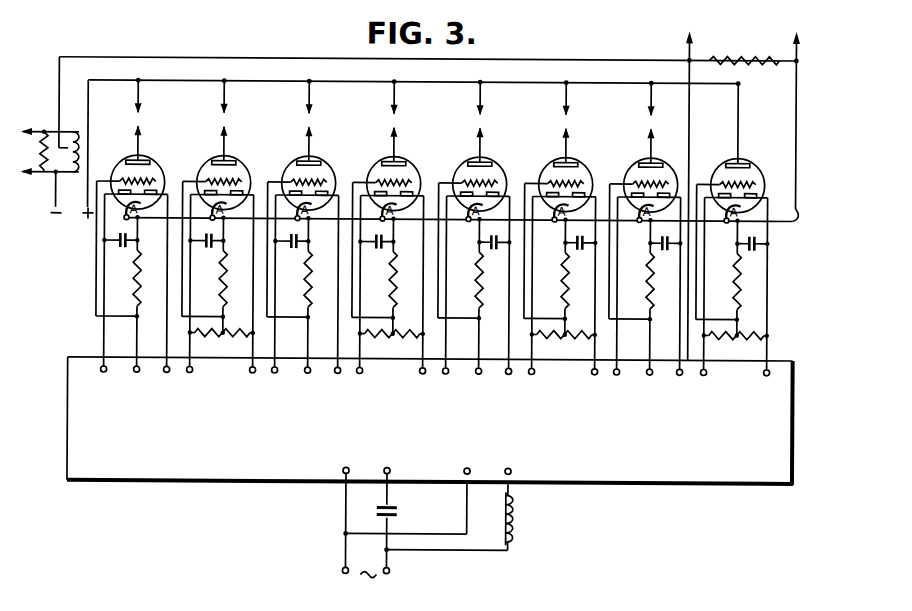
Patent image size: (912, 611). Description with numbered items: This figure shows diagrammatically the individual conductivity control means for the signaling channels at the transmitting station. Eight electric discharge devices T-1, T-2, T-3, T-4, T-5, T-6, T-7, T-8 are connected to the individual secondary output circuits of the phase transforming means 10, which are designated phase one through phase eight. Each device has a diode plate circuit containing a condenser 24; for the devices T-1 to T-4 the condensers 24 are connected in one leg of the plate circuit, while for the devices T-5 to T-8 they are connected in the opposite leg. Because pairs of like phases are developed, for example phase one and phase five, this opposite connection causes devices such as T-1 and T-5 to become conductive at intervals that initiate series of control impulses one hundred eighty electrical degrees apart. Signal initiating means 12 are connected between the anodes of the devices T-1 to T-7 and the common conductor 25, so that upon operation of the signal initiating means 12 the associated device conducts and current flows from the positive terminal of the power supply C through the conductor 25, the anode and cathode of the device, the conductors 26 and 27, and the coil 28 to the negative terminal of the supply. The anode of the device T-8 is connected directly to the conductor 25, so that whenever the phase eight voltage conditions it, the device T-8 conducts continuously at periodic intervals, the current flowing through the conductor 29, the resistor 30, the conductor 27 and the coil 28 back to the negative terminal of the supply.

The phase transforming means 10 is at (112, 472).
The signal initiating means 12 is at (304, 115).
The condensers 24 is at (120, 244).
The common conductor 25 is at (361, 72).
The conductor 26 is at (689, 146).
The conductor 27 is at (612, 49).
The coil 28 is at (78, 131).
The conductor 29 is at (463, 143).
The resistor 30 is at (758, 42).
The electric discharge device T-1 is at (173, 151).
The electric discharge device T-2 is at (259, 151).
The electric discharge device T-3 is at (305, 226).
The electric discharge device T-4 is at (429, 151).
The electric discharge device T-5 is at (515, 151).
The electric discharge device T-6 is at (601, 151).
The electric discharge device T-7 is at (686, 151).
The electric discharge device T-8 is at (773, 151).